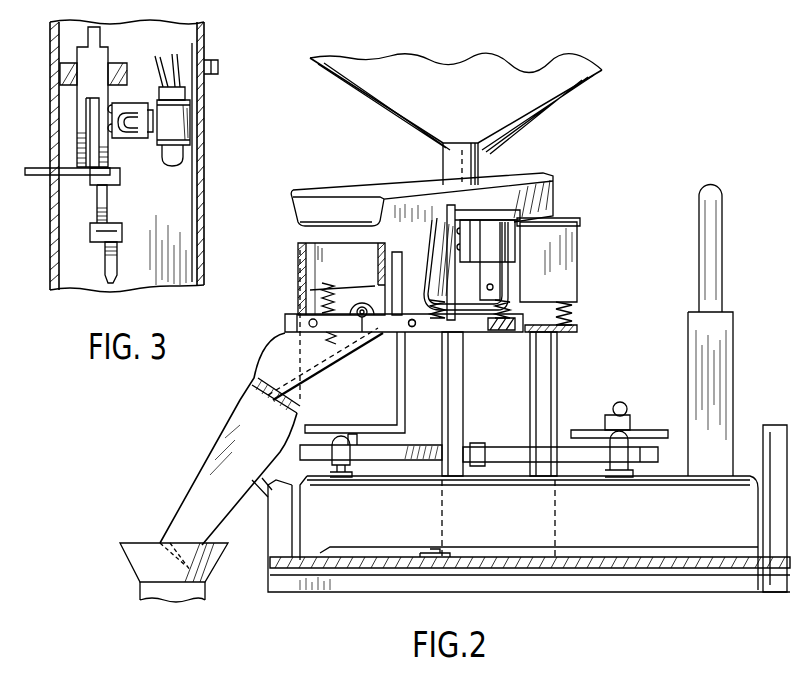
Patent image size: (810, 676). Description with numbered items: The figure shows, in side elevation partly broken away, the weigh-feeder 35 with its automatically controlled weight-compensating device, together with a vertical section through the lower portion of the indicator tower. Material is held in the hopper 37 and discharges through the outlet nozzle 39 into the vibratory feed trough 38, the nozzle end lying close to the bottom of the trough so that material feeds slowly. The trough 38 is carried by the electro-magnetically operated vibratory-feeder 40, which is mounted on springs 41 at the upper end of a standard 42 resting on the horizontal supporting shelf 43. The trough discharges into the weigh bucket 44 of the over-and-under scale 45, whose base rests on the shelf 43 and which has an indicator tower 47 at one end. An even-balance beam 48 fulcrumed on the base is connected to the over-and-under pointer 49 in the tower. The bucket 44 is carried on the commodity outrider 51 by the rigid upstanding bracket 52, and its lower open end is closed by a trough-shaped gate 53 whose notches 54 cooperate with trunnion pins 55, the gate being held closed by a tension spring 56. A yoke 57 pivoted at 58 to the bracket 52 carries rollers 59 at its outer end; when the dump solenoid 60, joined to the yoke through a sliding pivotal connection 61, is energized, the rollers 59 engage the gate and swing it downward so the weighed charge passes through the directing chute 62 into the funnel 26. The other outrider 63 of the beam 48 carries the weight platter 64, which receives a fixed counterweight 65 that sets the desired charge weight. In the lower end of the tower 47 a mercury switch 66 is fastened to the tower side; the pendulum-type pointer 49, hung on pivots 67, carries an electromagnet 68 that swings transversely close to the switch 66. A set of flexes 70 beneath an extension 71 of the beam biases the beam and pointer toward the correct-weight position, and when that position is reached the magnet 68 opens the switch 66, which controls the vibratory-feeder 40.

In FIG. 2, the funnel 26 is at (135, 553).
In FIG. 2, the weigh-feeder 35 is at (580, 262).
In FIG. 2, the material hopper 37 is at (540, 110).
In FIG. 2, the vibratory feed trough 38 is at (350, 190).
In FIG. 2, the outlet nozzle 39 is at (478, 162).
In FIG. 2, the vibratory-feeder 40 is at (578, 238).
In FIG. 2, the springs 41 is at (575, 310).
In FIG. 2, the standard 42 is at (560, 356).
In FIG. 2, the horizontal supporting shelf 43 is at (685, 578).
In FIG. 2, the weigh bucket 44 is at (300, 258).
In FIG. 2, the scale 45 is at (612, 538).
In FIG. 3, the indicator tower 47 is at (204, 172).
In FIG. 2, the indicator tower 47 is at (726, 380).
In FIG. 2, the even-balance beam 48 is at (420, 445).
In FIG. 3, the over-and-under pointer 49 is at (94, 37).
In FIG. 2, the commodity outrider 51 is at (330, 440).
In FIG. 2, the upstanding bracket 52 is at (397, 392).
In FIG. 2, the trough-shaped gate 53 is at (312, 368).
In FIG. 2, the notches 54 is at (364, 310).
In FIG. 2, the trunnion pins 55 is at (364, 332).
In FIG. 2, the tension spring 56 is at (320, 290).
In FIG. 2, the yoke 57 is at (470, 345).
In FIG. 2, the pivot 58 is at (412, 330).
In FIG. 2, the rollers 59 is at (296, 318).
In FIG. 2, the dump solenoid 60 is at (500, 230).
In FIG. 2, the sliding pivotal connection 61 is at (500, 332).
In FIG. 2, the directing chute 62 is at (236, 476).
In FIG. 2, the weight outrider 63 is at (628, 455).
In FIG. 2, the weight platter 64 is at (620, 440).
In FIG. 2, the counterweight 65 is at (610, 425).
In FIG. 3, the mercury switch 66 is at (175, 122).
In FIG. 3, the pivots 67 is at (115, 72).
In FIG. 3, the electromagnet 68 is at (118, 138).
In FIG. 3, the flexes 70 is at (105, 207).
In FIG. 3, the beam extension 71 is at (40, 175).